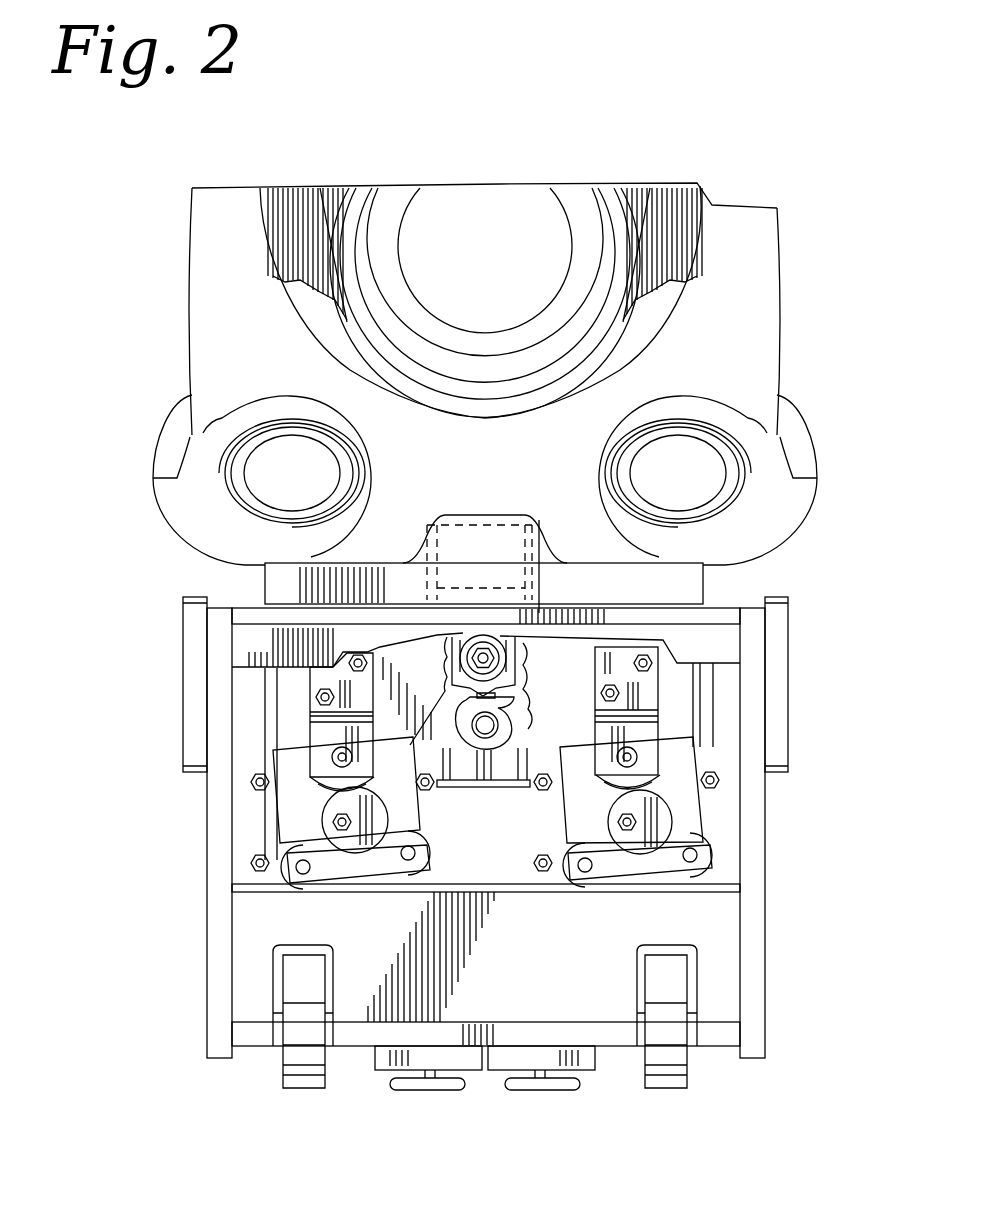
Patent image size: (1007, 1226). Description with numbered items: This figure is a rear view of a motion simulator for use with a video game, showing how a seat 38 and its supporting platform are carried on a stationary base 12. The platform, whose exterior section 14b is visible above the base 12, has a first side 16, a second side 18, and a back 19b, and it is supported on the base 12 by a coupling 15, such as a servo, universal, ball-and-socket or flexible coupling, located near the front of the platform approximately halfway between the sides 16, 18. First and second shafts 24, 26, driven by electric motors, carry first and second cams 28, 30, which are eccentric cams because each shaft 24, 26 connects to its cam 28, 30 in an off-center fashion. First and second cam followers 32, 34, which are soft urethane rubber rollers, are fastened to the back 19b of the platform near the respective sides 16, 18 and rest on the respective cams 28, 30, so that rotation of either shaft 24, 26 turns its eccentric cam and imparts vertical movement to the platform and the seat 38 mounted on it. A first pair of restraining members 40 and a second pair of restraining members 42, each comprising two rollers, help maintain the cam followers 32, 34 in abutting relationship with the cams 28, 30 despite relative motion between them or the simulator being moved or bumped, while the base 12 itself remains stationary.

The seat 38 is at (770, 263).
The coupling 15 is at (486, 636).
The exterior section 14b is at (656, 597).
The first side 16 is at (290, 692).
The second side 18 is at (683, 700).
The back 19b is at (581, 721).
The first cam 28 is at (382, 822).
The second cam 30 is at (663, 818).
The first cam follower 32 is at (327, 783).
The second cam follower 34 is at (645, 780).
The first pair of restraining members 40 is at (443, 857).
The second pair of restraining members 42 is at (735, 857).
The base 12 is at (753, 947).
The first shaft 24 is at (332, 880).
The second shaft 26 is at (623, 840).